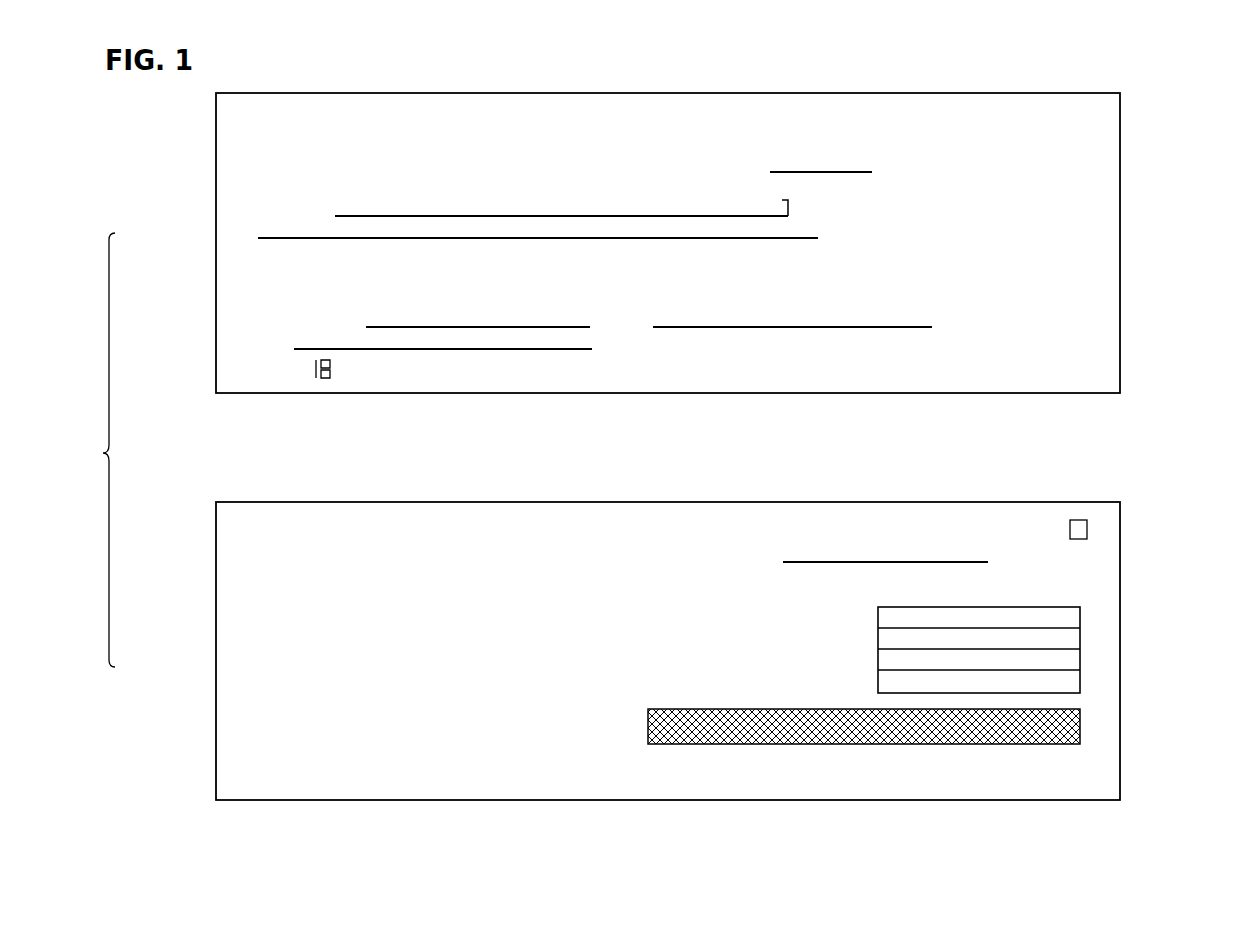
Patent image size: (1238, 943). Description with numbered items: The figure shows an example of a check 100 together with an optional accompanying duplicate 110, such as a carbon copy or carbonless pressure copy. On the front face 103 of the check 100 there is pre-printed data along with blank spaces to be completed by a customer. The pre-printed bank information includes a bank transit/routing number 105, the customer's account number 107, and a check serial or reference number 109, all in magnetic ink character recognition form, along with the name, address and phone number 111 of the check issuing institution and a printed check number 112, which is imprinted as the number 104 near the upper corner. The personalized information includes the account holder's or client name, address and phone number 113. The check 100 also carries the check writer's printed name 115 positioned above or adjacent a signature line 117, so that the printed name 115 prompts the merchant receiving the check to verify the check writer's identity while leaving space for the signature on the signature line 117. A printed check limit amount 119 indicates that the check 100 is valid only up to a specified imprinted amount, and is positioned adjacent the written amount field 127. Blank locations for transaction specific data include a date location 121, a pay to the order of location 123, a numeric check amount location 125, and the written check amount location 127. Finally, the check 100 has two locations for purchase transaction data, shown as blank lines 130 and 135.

The check 100 is at (579, 33).
The front face 103 is at (672, 127).
The check number 104 is at (1002, 142).
The bank transit/routing number 105 is at (388, 378).
The customer's account number 107 is at (490, 377).
The check serial or reference number 109 is at (672, 378).
The duplicate 110 is at (584, 611).
The name, address and phone number of the check issuing institution 111 is at (248, 273).
The printed check number 112 is at (1004, 123).
The client name, address and phone number 113 is at (316, 127).
The printed name 115 is at (778, 270).
The signature line 117 is at (903, 334).
The printed check limit amount 119 is at (1024, 252).
The date location 121 is at (822, 162).
The pay to the order of location 123 is at (496, 215).
The numeric check amount location 125 is at (1042, 178).
The written check amount location 127 is at (611, 238).
The blank line 130 is at (250, 343).
The blank line 135 is at (248, 320).